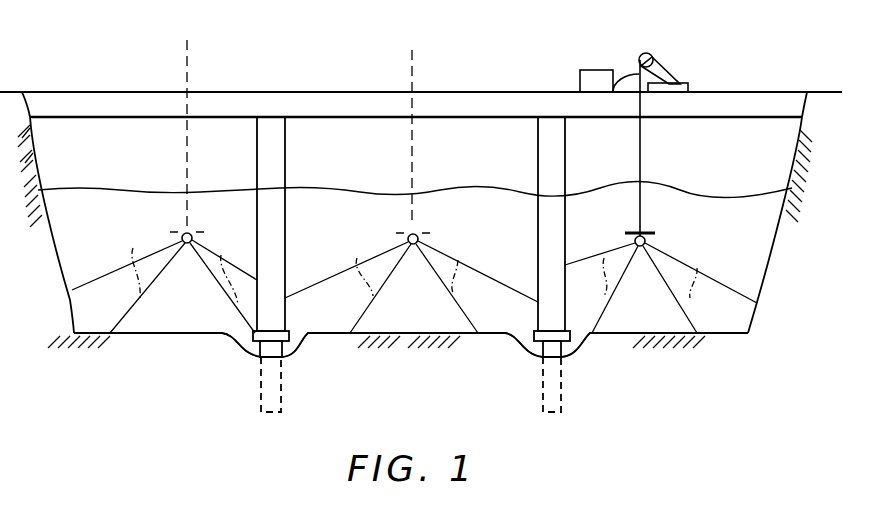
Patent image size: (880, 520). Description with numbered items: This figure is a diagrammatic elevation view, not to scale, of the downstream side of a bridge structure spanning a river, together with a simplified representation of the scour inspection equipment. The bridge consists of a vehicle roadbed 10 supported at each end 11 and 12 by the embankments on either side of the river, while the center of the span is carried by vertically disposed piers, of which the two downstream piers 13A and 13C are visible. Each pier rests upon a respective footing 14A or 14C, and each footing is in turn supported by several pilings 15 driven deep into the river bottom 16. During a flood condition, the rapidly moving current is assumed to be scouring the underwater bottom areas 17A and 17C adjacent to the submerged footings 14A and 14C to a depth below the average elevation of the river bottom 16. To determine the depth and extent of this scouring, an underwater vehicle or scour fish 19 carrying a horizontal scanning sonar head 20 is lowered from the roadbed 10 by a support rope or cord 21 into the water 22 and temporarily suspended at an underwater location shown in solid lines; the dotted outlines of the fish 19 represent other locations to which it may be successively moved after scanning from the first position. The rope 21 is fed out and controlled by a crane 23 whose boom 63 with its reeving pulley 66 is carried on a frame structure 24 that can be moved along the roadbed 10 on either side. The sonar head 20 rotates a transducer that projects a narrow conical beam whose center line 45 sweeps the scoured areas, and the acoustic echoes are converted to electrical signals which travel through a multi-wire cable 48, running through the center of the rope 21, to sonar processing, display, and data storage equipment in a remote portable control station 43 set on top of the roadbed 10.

The vehicle roadbed 10 is at (462, 92).
The end of roadbed 11 is at (803, 92).
The end of roadbed 12 is at (27, 92).
The pier 13A is at (566, 164).
The pier 13C is at (286, 164).
The footing 14A is at (571, 333).
The footing 14C is at (290, 335).
The pilings 15 is at (283, 400).
The river bottom 16 is at (425, 333).
The underwater bottom area 17A is at (527, 352).
The underwater bottom area 17C is at (240, 353).
The underwater vehicle (scour fish) 19 is at (164, 234).
The sonar scanning head 20 is at (630, 232).
The support rope or cord 21 is at (641, 164).
The water 22 is at (495, 200).
The crane 23 is at (672, 71).
The frame structure 24 is at (687, 83).
The portable control station 43 is at (590, 70).
The center line of sonar beam 45 is at (135, 250).
The multi-wire cable 48 is at (622, 76).
The boom 63 is at (652, 58).
The reeving pulley 66 is at (648, 52).